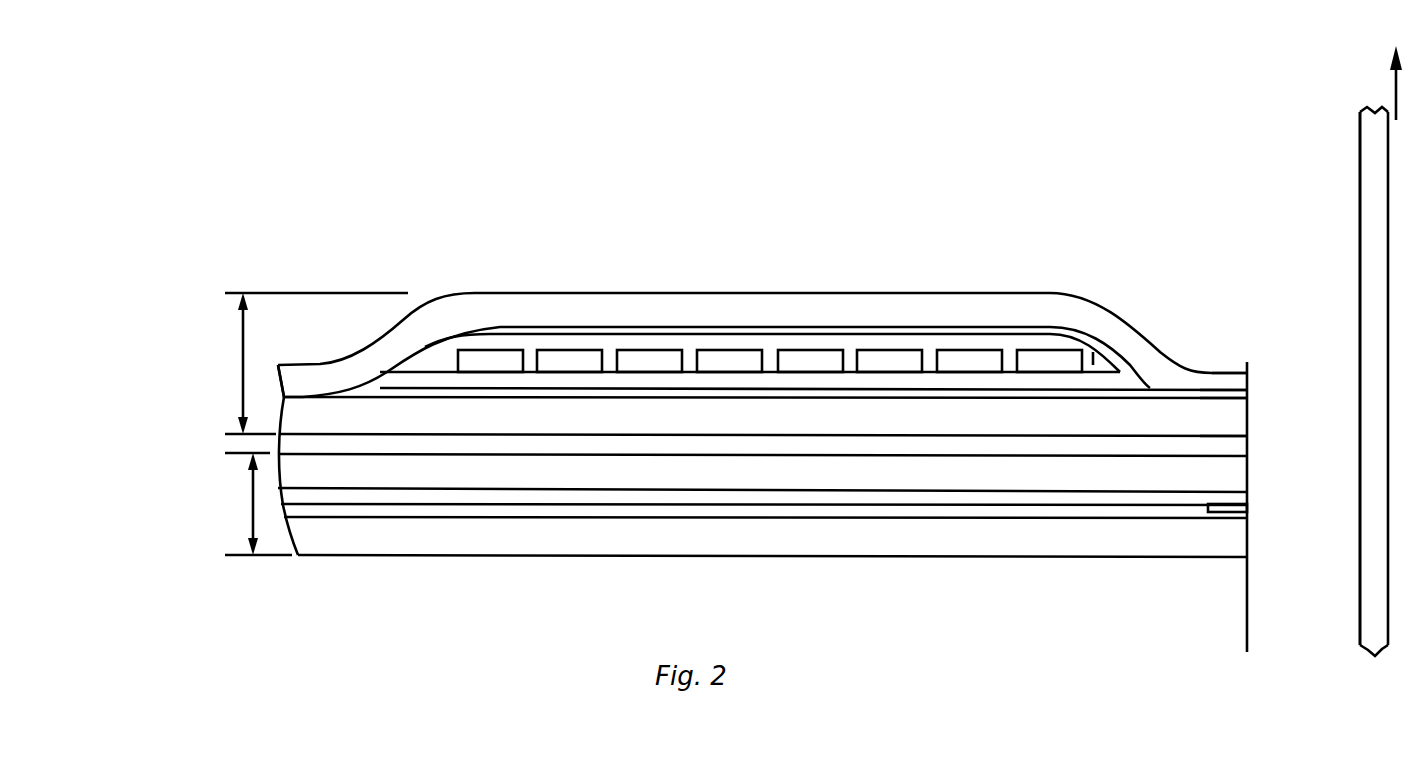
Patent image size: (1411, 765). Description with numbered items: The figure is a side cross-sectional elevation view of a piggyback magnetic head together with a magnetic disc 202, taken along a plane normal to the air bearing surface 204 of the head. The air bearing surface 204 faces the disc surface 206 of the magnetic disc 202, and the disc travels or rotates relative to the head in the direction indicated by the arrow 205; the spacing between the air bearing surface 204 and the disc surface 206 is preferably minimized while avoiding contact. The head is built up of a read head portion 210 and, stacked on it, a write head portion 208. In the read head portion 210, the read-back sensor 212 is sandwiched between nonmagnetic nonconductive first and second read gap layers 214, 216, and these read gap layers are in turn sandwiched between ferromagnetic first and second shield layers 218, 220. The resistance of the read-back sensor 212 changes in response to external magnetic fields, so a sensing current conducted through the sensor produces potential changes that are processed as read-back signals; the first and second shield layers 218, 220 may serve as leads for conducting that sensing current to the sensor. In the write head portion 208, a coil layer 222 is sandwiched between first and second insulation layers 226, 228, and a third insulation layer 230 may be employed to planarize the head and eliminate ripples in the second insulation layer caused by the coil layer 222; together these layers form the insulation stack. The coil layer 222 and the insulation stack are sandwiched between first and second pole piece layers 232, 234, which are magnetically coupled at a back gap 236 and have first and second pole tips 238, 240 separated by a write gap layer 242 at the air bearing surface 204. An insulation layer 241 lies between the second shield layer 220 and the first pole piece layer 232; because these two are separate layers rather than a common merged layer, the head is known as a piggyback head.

The magnetic disc 202 is at (1375, 170).
The air bearing surface 204 is at (1247, 593).
The arrow 205 is at (1395, 87).
The disc surface 206 is at (1360, 140).
The write head portion 208 is at (240, 396).
The read head portion 210 is at (250, 526).
The read-back sensor 212 is at (1247, 508).
The first read gap layer 214 is at (798, 520).
The second read gap layer 216 is at (730, 487).
The first shield layer 218 is at (927, 535).
The second shield layer 220 is at (1072, 475).
The coil layer 222 is at (815, 362).
The first insulation layer 226 is at (553, 380).
The second insulation layer 228 is at (1090, 365).
The third insulation layer 230 is at (512, 330).
The first pole piece layer 232 is at (1137, 417).
The second pole piece layer 234 is at (945, 302).
The back gap 236 is at (300, 397).
The first pole tip 238 is at (1230, 424).
The second pole tip 240 is at (1211, 385).
The insulation layer 241 is at (1002, 442).
The write gap layer 242 is at (1240, 395).